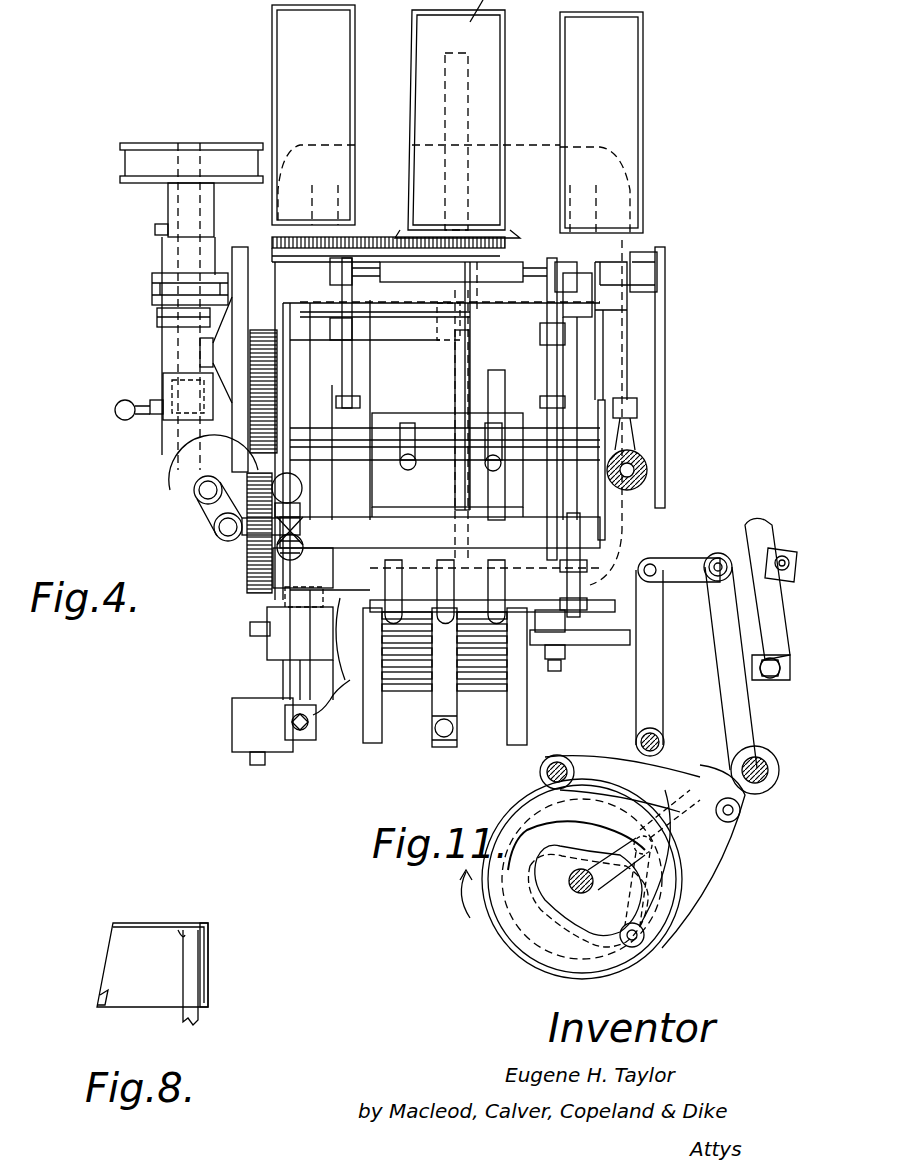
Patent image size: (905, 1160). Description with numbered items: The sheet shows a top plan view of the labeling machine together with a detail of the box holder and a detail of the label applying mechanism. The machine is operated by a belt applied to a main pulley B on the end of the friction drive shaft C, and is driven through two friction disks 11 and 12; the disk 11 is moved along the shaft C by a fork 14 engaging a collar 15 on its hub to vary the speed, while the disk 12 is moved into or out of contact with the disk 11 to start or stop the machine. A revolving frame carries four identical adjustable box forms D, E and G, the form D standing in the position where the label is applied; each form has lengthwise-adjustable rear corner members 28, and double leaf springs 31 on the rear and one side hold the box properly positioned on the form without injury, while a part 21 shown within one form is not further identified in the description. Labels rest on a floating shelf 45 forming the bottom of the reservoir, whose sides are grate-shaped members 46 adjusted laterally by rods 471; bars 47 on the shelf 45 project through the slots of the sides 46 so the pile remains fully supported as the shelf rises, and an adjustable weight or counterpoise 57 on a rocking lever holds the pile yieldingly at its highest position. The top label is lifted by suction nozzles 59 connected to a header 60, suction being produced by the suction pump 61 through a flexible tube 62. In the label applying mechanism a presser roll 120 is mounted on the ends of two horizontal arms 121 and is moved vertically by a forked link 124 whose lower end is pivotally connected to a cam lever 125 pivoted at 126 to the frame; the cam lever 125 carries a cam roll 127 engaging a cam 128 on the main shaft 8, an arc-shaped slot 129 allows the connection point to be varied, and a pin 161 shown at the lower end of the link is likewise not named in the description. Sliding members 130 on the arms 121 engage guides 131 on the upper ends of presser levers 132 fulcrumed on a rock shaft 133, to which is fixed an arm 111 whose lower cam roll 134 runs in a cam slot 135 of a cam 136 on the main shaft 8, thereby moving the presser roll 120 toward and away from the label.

In FIG. 4, the box form E is at (272, 38).
In FIG. 4, the box form G is at (637, 62).
In FIG. 4, the main pulley B is at (125, 165).
In FIG. 4, the friction drive shaft C is at (200, 143).
In FIG. 8, the box form D is at (143, 923).
In FIG. 4, the plunger 21 is at (445, 75).
In FIG. 4, the friction disk 11 is at (152, 292).
In FIG. 4, the fork 14 is at (157, 318).
In FIG. 4, the collar 15 is at (200, 345).
In FIG. 4, the friction disk 12 is at (240, 247).
In FIG. 4, the suction pump 61 is at (185, 485).
In FIG. 4, the flexible tube 62 is at (212, 525).
In FIG. 4, the header 60 is at (370, 588).
In FIG. 4, the suction nozzles 59 is at (485, 568).
In FIG. 4, the presser roll 120 is at (512, 262).
In FIG. 11, the presser roll 120 is at (758, 520).
In FIG. 4, the horizontal arms 121 is at (348, 258).
In FIG. 11, the horizontal arms 121 is at (685, 560).
In FIG. 4, the forked link 124 is at (440, 322).
In FIG. 11, the forked link 124 is at (718, 676).
In FIG. 4, the cam lever 125 is at (455, 372).
In FIG. 11, the cam lever 125 is at (612, 762).
In FIG. 4, the pivot 126 is at (440, 532).
In FIG. 11, the pivot 126 is at (557, 760).
In FIG. 4, the cam roll 127 is at (470, 385).
In FIG. 11, the cam roll 127 is at (628, 850).
In FIG. 4, the cam 128 is at (505, 395).
In FIG. 11, the cam 128 is at (498, 938).
In FIG. 11, the arc-shaped slot 129 is at (690, 780).
In FIG. 11, the sliding members 130 is at (790, 545).
In FIG. 11, the guides 131 is at (770, 618).
In FIG. 11, the presser levers 132 is at (752, 520).
In FIG. 11, the rock shaft 133 is at (758, 778).
In FIG. 11, the cam roll 134 is at (640, 947).
In FIG. 11, the cam slot 135 is at (525, 835).
In FIG. 11, the cam 136 is at (540, 970).
In FIG. 11, the pin 161 is at (637, 740).
In FIG. 11, the main shaft 8 is at (570, 878).
In FIG. 11, the arm 111 is at (690, 845).
In FIG. 4, the rods 471 is at (250, 630).
In FIG. 4, the weight or counterpoise 57 is at (232, 725).
In FIG. 4, the grate-shaped members 46 is at (372, 735).
In FIG. 4, the floating shelf 45 is at (452, 700).
In FIG. 4, the bars 47 is at (398, 695).
In FIG. 8, the double leaf springs 31 is at (210, 967).
In FIG. 8, the rear corner members 28 is at (185, 1012).